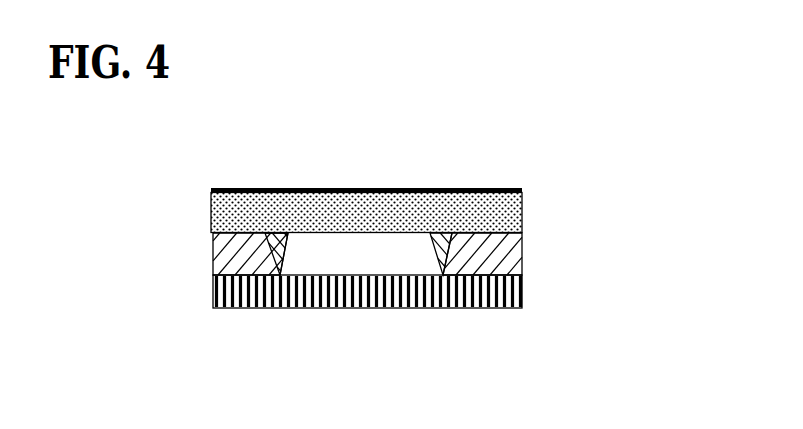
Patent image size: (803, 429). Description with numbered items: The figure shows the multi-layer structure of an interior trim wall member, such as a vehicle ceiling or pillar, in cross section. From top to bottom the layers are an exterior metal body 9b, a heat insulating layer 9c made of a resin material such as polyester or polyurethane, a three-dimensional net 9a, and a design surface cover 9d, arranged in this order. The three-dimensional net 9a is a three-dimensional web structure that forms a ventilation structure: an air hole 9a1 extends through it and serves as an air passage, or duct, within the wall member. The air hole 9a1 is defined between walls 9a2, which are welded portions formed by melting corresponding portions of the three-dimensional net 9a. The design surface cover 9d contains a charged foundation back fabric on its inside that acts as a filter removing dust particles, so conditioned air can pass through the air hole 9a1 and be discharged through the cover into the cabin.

The 3D net 9a is at (406, 294).
The air hole 9a1 is at (366, 253).
The wall 9a2 is at (282, 258).
The exterior metal body 9b is at (492, 188).
The heat insulating layer 9c is at (509, 210).
The design surface cover 9d is at (514, 293).